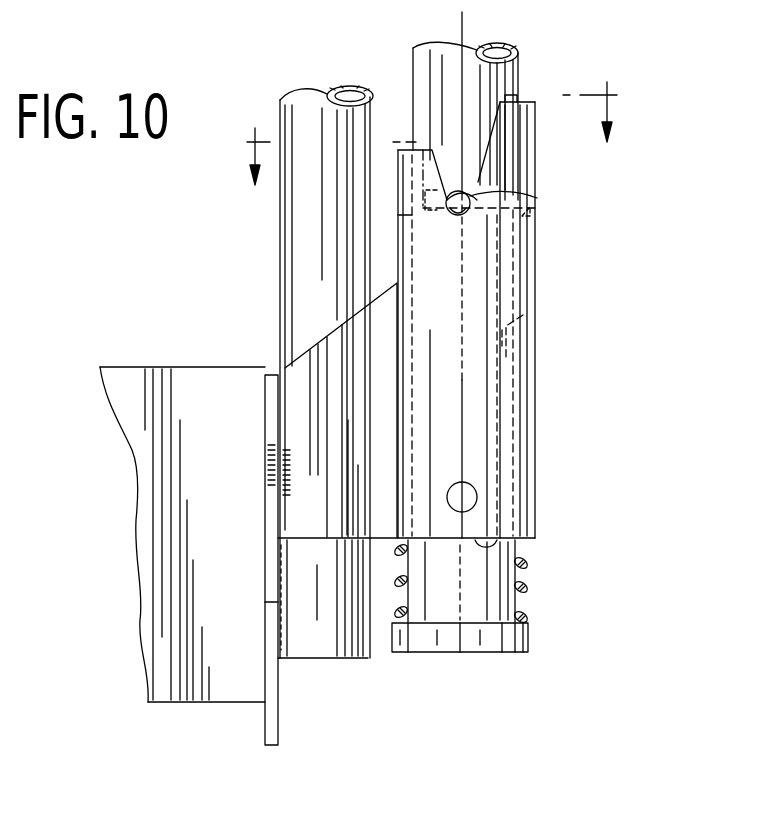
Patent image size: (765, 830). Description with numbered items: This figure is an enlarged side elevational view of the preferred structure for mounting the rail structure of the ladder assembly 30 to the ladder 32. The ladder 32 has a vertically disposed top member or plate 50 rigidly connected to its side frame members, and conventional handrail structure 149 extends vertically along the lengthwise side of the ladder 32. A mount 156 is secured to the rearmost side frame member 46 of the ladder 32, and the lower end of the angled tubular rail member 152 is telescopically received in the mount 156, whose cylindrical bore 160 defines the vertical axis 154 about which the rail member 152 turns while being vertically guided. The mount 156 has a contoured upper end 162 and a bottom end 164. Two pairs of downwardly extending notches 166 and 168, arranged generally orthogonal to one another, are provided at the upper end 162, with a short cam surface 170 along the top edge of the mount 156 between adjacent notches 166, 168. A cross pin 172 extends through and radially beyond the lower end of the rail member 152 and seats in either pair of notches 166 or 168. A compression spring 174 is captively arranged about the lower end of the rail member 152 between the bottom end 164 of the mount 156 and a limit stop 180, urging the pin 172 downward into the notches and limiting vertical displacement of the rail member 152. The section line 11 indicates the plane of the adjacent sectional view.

The section line 11- 11 is at (434, 128).
The ladder assembly 30 is at (118, 731).
The ladder 32 is at (145, 355).
The side frame member 46 is at (272, 540).
The top member or plate 50 is at (232, 481).
The handrail structure 149 is at (295, 272).
The rail member 152 is at (537, 72).
The vertical axis 154 is at (462, 390).
The mount 156 is at (580, 436).
The cylindrical bore 160 is at (537, 307).
The contoured upper end 162 is at (533, 127).
The bottom end 164 is at (500, 538).
The notches 166 is at (468, 215).
The notches 168 is at (530, 212).
The cam surface 170 is at (423, 150).
The cross pin 172 is at (470, 196).
The spring 174 is at (527, 588).
The limit stop 180 is at (530, 640).